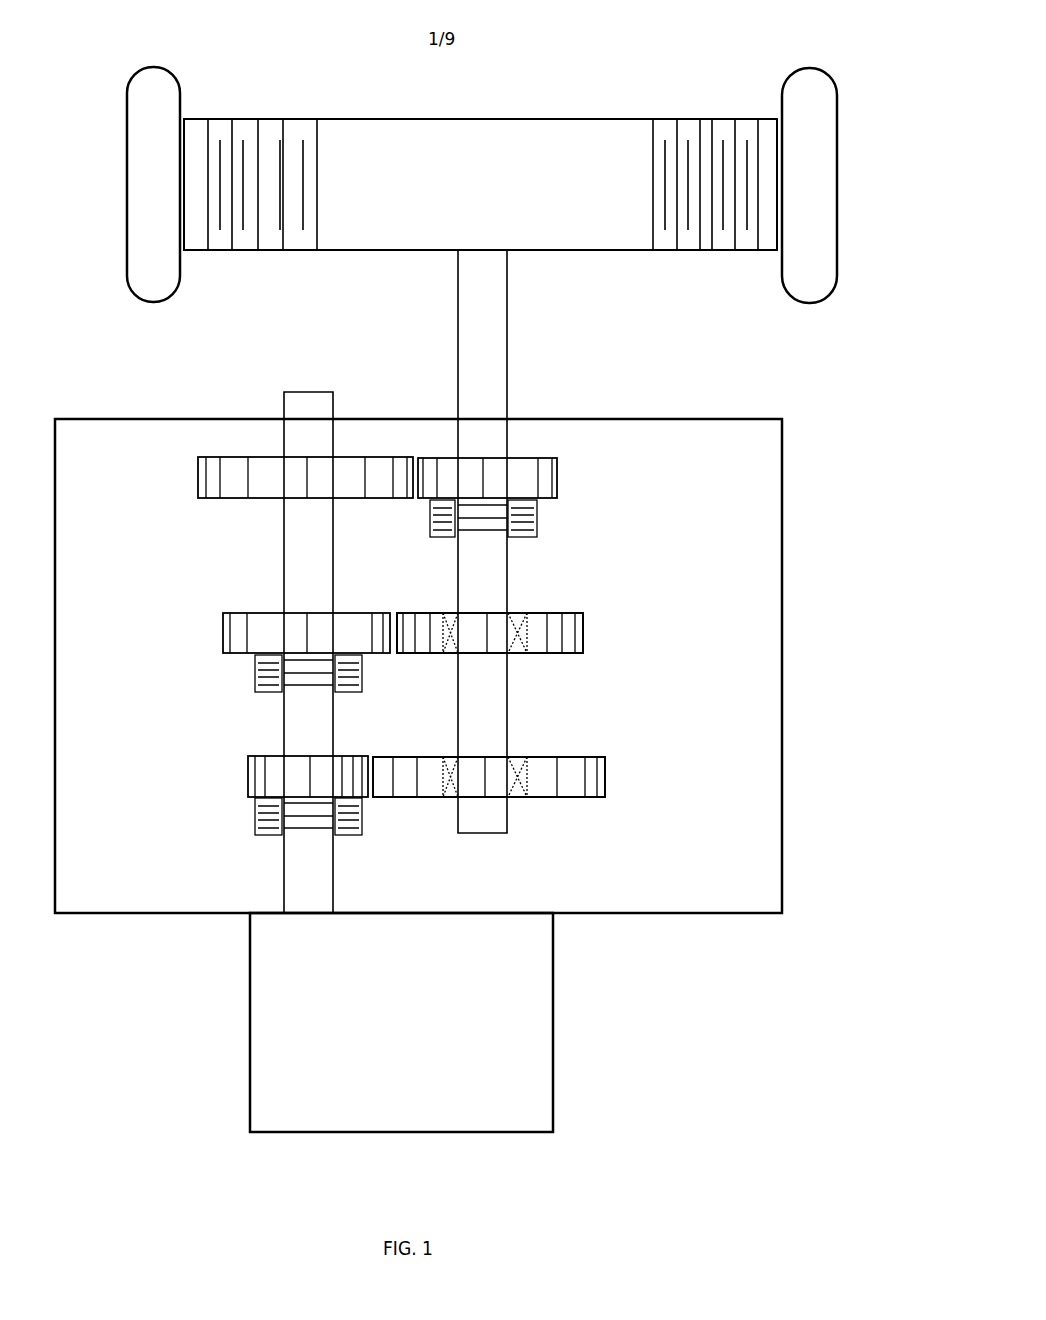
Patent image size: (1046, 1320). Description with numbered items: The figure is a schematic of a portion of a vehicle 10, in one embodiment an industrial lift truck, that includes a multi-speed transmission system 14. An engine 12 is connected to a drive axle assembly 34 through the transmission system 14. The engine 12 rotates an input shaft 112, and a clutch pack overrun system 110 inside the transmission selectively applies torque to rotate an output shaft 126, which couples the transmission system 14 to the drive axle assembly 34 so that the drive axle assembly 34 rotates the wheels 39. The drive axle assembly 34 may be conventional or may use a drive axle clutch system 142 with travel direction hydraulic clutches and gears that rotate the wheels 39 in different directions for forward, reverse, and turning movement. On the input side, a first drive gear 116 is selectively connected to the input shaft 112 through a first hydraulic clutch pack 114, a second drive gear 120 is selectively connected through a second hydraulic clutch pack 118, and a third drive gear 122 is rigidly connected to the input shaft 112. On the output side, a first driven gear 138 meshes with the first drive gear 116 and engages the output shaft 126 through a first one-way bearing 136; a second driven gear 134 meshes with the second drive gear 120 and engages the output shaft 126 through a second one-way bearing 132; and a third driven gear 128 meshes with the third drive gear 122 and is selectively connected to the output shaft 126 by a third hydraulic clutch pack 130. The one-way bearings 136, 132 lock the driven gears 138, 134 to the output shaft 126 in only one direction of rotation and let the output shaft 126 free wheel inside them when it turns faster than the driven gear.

The vehicle 10 is at (727, 1078).
The engine 12 is at (250, 1095).
The multi-speed transmission system 14 is at (713, 418).
The drive axle assembly 34 is at (480, 119).
The wheels 39 is at (136, 67).
The clutch pack overrun system 110 is at (437, 863).
The input shaft 112 is at (335, 884).
The first hydraulic clutch pack 114 is at (255, 822).
The first drive gear 116 is at (262, 755).
The second hydraulic clutch pack 118 is at (255, 678).
The second drive gear 120 is at (235, 613).
The third drive gear 122 is at (222, 500).
The output shaft 126 is at (458, 380).
The third driven gear 128 is at (557, 477).
The third hydraulic clutch pack 130 is at (538, 530).
The second one-way bearing 132 is at (518, 613).
The second driven gear 134 is at (557, 655).
The first one-way bearing 136 is at (520, 755).
The first driven gear 138 is at (572, 798).
The drive axle clutch system 142 is at (318, 185).